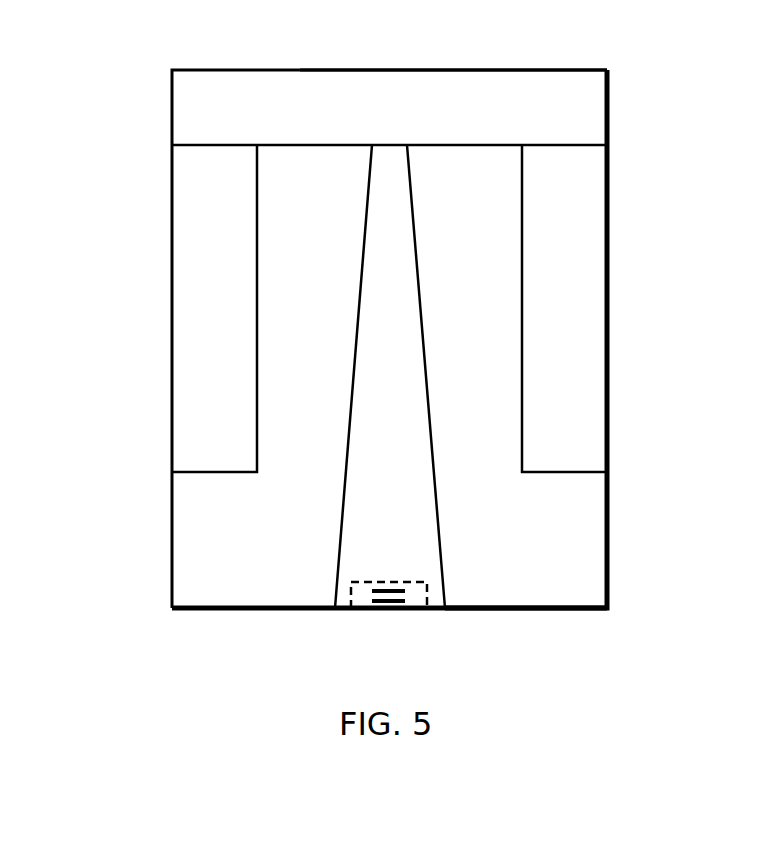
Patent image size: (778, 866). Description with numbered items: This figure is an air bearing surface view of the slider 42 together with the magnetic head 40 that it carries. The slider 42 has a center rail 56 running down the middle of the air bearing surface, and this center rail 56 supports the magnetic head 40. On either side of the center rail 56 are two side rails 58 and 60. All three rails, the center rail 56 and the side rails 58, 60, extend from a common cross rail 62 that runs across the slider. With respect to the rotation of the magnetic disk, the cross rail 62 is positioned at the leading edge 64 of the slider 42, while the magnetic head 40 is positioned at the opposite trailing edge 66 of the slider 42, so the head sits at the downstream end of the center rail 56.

The magnetic head 40 is at (365, 600).
The slider 42 is at (145, 553).
The center rail 56 is at (377, 255).
The side rail 58 is at (185, 216).
The side rail 60 is at (582, 215).
The cross rail 62 is at (304, 78).
The leading edge 64 is at (457, 70).
The trailing edge 66 is at (505, 612).